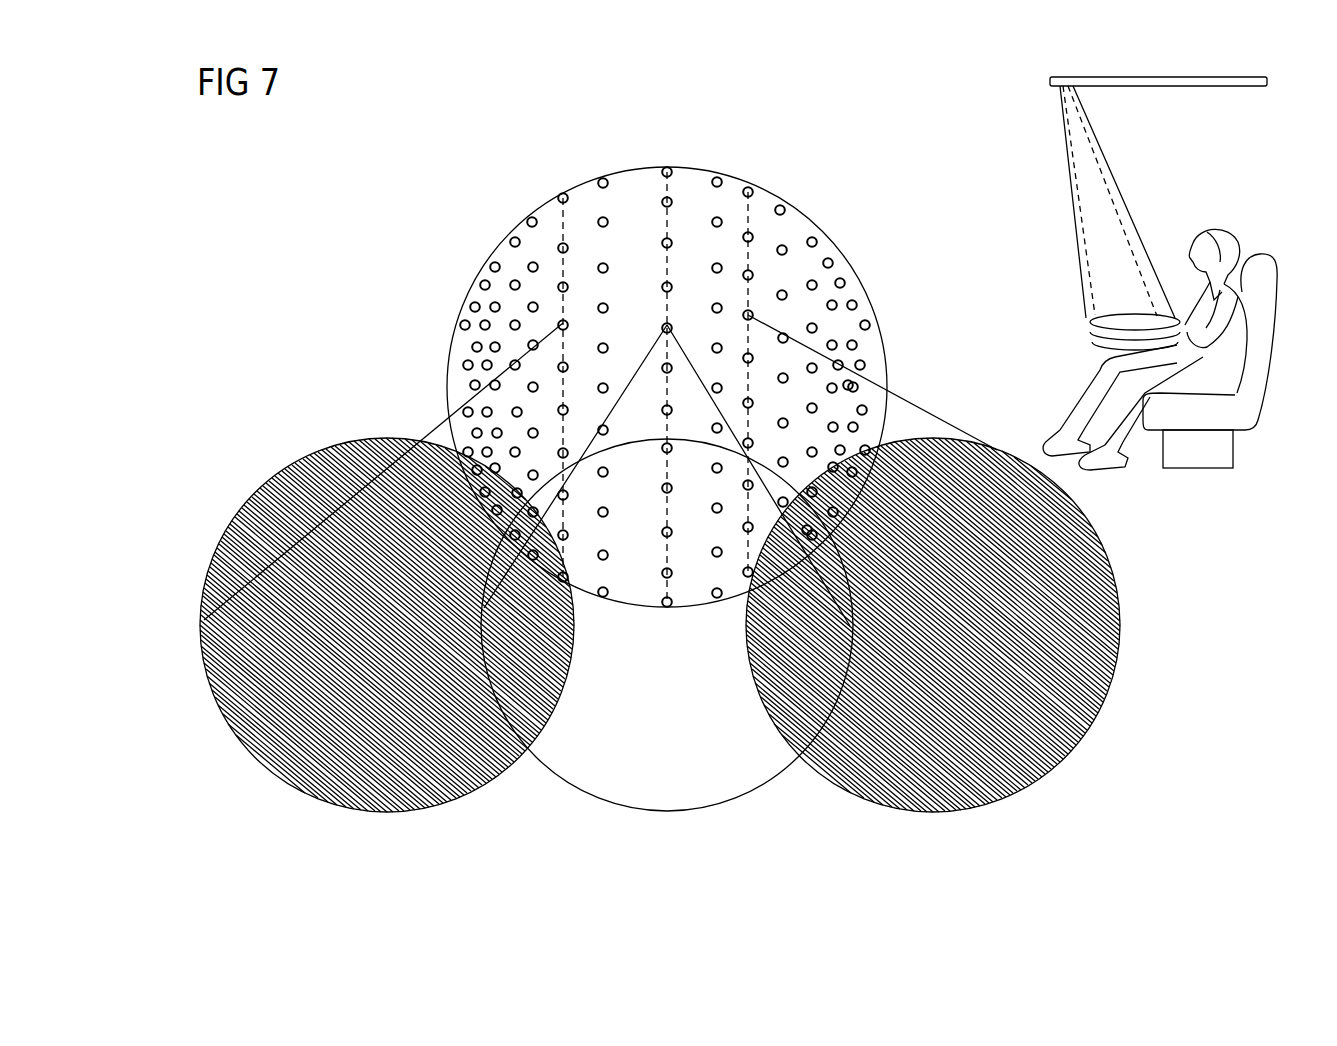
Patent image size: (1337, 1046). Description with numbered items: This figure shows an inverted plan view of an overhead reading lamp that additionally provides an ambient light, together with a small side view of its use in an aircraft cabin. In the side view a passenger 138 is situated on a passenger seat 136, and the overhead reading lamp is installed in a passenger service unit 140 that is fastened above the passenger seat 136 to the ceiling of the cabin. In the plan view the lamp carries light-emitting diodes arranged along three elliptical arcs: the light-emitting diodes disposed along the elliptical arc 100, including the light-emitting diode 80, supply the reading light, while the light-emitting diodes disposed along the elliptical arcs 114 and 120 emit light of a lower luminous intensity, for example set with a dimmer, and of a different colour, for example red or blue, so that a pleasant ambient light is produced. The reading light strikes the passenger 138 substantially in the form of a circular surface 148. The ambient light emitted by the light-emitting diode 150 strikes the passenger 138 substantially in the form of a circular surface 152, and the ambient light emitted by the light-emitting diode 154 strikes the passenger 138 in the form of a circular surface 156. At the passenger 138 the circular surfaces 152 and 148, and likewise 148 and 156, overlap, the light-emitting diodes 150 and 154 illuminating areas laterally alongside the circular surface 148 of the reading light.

The light-emitting diode 80 is at (667, 323).
The elliptical arc 100 is at (673, 180).
The elliptical arc 114 is at (558, 232).
The elliptical arc 120 is at (748, 213).
The passenger seat 136 is at (1258, 363).
The passenger 138 is at (1220, 232).
The passenger service unit 140 is at (1268, 88).
The circular surface 148 is at (766, 772).
The light-emitting diode 150 is at (563, 323).
The circular surface 152 is at (320, 452).
The light-emitting diode 154 is at (748, 315).
The circular surface 156 is at (1119, 633).